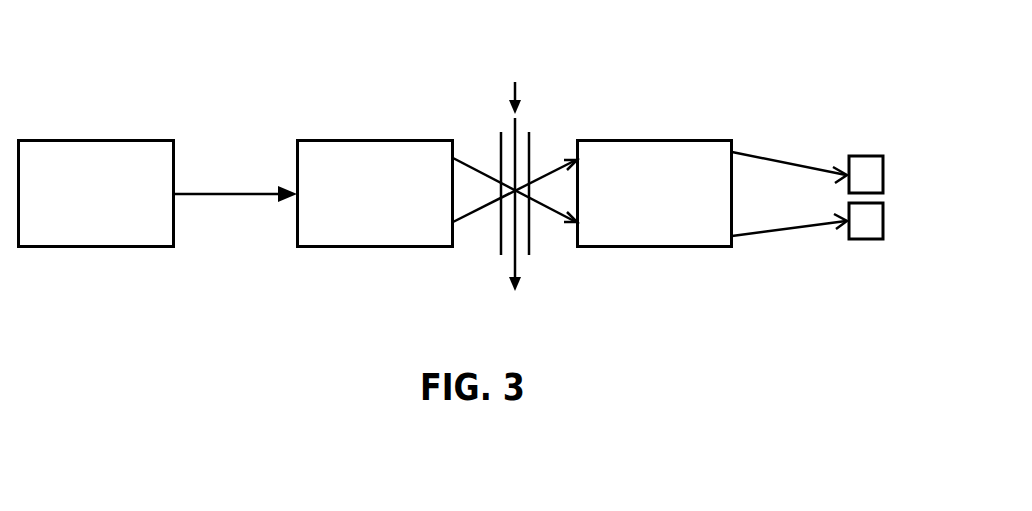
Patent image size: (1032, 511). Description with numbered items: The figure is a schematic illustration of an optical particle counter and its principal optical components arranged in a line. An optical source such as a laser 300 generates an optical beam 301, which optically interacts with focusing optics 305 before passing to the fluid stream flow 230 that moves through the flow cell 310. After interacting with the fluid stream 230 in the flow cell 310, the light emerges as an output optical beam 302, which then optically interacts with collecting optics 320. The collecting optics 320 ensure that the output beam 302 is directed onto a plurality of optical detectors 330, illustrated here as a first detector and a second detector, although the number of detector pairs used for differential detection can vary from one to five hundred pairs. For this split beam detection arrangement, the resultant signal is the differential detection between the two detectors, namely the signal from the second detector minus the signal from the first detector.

The laser 300 is at (55, 140).
The optical beam 301 is at (220, 194).
The focusing optics 305 is at (330, 140).
The fluid stream flow 230 is at (512, 95).
The flow cell 310 is at (501, 238).
The output optical beam 302 is at (568, 163).
The collecting optics 320 is at (610, 140).
The optical detectors 330 is at (857, 155).